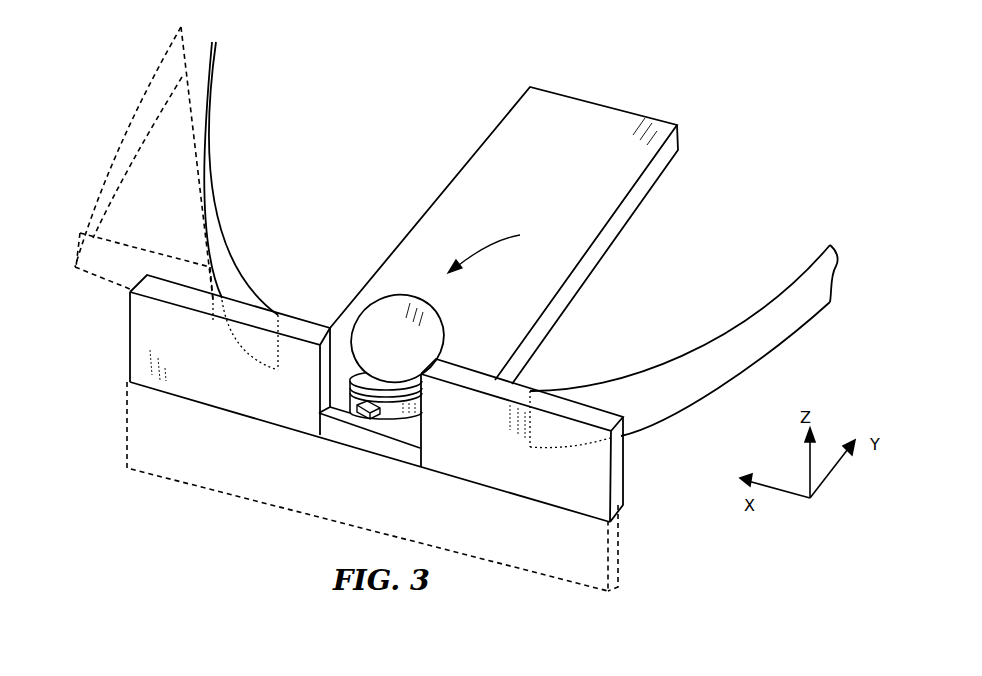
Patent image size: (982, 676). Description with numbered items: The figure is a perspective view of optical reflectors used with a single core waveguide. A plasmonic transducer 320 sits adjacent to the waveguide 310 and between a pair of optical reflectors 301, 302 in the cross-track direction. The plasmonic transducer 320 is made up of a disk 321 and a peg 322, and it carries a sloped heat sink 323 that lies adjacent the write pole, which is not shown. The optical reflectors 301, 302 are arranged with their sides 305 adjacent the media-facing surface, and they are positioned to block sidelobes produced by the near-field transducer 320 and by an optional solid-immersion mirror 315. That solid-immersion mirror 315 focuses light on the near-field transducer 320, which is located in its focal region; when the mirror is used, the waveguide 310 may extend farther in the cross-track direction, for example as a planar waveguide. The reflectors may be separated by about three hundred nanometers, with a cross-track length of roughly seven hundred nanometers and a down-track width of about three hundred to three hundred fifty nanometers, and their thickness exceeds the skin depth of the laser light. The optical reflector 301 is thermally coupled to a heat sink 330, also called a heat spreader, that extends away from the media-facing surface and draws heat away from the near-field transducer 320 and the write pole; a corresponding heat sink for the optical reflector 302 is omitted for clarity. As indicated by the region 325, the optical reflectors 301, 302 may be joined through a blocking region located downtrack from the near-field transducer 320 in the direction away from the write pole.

The optical reflector 301 is at (142, 358).
The optical reflector 302 is at (622, 512).
The sides 305 is at (210, 407).
The waveguide 310 is at (577, 123).
The solid-immersion mirror 315 is at (207, 122).
The plasmonic transducer 320 is at (509, 249).
The disk 321 is at (397, 415).
The peg 322 is at (357, 418).
The sloped heat sink 323 is at (385, 312).
The region 325 is at (245, 500).
The heat sink 330 is at (120, 188).